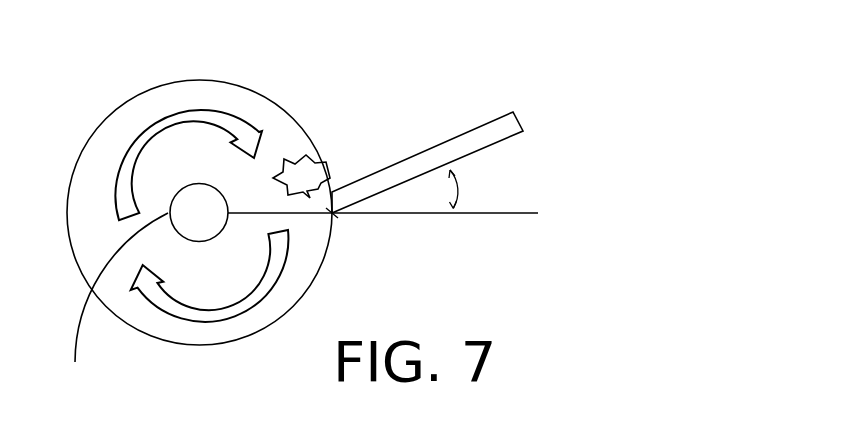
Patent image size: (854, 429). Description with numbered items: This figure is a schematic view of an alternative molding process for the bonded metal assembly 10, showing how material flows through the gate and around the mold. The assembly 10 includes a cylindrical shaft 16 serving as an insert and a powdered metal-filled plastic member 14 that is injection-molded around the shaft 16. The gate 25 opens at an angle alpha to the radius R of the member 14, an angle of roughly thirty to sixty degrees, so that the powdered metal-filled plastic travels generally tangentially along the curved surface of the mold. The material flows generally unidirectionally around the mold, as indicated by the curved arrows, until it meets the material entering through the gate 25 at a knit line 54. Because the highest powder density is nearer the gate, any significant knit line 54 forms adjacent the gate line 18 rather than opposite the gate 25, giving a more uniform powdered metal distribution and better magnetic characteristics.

The bonded metal assembly 10 is at (288, 98).
The powdered metal-filled plastic member 14 is at (310, 287).
The cylindrical shaft 16 is at (115, 303).
The injection-molding gate line 18 is at (316, 206).
The gate 25 is at (475, 158).
The knit line 54 is at (322, 162).